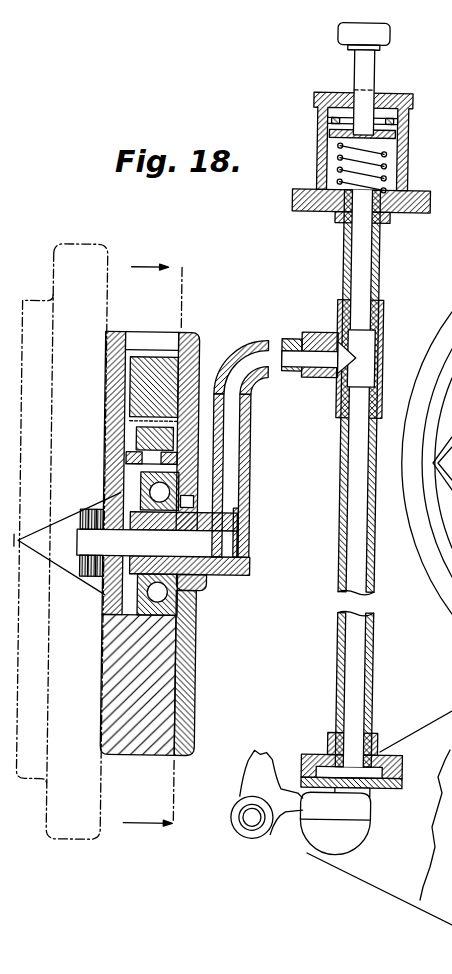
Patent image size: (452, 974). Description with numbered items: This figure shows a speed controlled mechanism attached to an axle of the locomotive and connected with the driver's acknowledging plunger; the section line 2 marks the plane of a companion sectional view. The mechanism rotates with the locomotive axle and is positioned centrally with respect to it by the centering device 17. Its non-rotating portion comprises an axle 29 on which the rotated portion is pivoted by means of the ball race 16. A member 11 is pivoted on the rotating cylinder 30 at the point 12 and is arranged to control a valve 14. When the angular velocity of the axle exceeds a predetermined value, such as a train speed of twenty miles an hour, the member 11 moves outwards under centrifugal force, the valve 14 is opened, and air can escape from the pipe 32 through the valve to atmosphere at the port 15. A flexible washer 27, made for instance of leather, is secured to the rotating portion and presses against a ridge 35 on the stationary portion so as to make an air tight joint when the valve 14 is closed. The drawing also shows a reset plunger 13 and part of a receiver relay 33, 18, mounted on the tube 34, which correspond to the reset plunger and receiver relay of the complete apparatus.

The section line 2- 2 is at (163, 549).
The member 11 is at (196, 356).
The pivot point 12 is at (123, 397).
The reset plunger 13 is at (376, 68).
The valve 14 is at (128, 440).
The port 15 is at (151, 340).
The ball race 16 is at (150, 491).
The centering device 17 is at (46, 528).
The receiver relay part 18 is at (372, 856).
The flexible washer 27 is at (199, 629).
The axle 29 is at (205, 581).
The rotating cylinder 30 is at (156, 716).
The pipe 32 is at (244, 471).
The receiver relay part 33 is at (283, 765).
The tube 34 is at (360, 548).
The ridge 35 is at (195, 503).